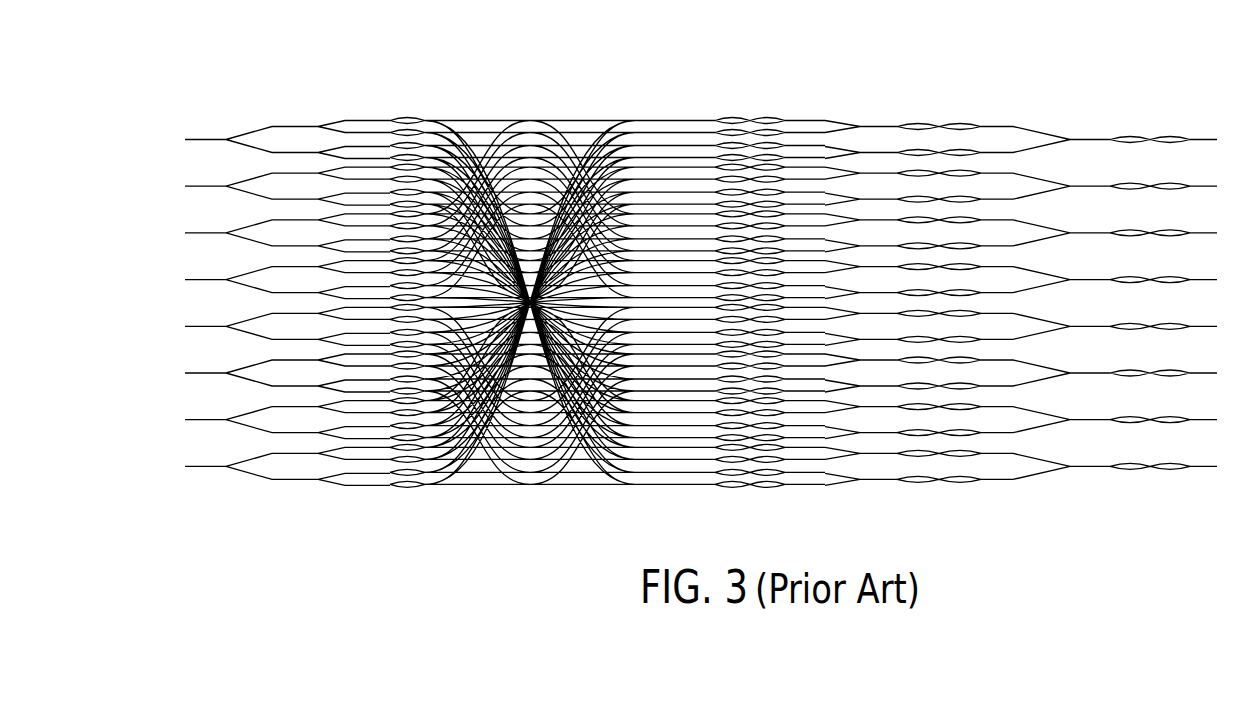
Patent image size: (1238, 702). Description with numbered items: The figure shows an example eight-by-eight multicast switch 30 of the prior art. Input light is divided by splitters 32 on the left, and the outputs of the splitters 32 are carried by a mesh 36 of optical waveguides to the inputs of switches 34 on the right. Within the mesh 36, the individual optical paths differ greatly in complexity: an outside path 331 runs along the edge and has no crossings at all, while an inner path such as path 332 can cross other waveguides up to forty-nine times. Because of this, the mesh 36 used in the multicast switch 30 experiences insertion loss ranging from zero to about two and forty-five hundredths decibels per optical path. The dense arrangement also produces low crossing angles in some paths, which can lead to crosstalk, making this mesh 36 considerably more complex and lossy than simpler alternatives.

The multicast switch 30 is at (1131, 102).
The splitters 32 is at (297, 494).
The path 331 is at (432, 116).
The path 332 is at (632, 165).
The switches 34 is at (818, 494).
The mesh 36 is at (540, 494).